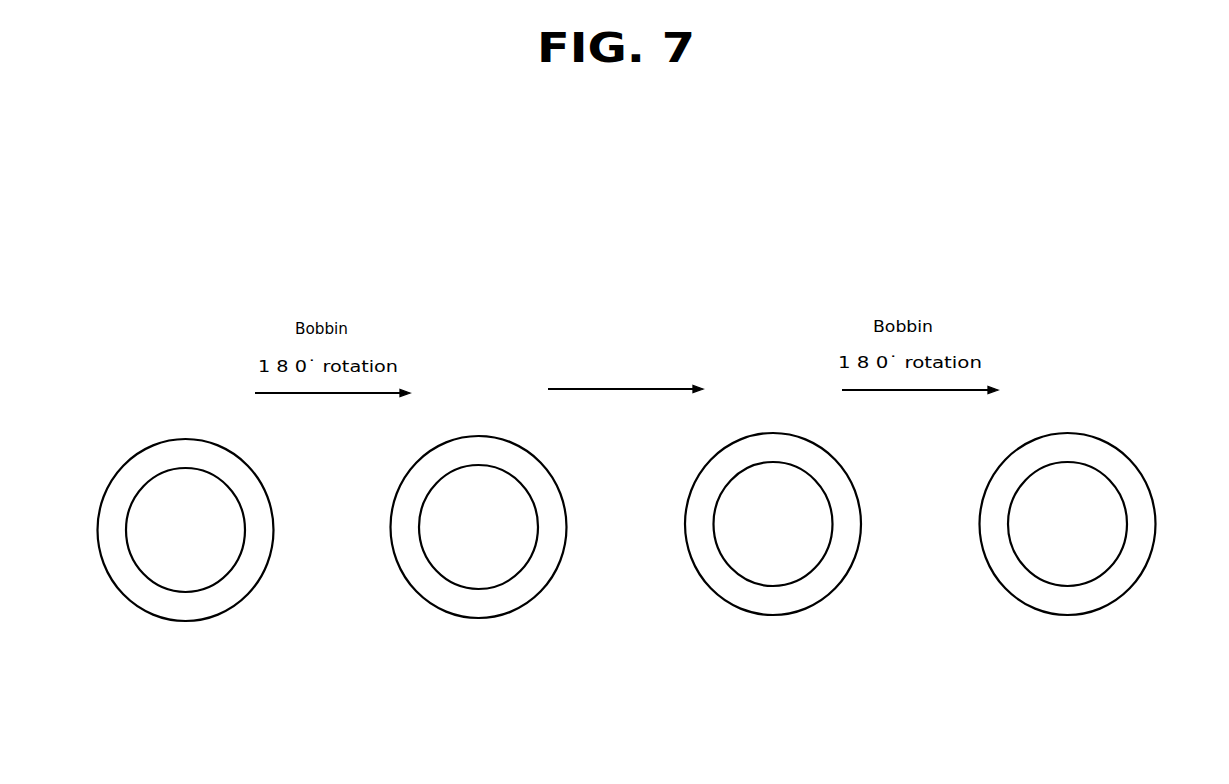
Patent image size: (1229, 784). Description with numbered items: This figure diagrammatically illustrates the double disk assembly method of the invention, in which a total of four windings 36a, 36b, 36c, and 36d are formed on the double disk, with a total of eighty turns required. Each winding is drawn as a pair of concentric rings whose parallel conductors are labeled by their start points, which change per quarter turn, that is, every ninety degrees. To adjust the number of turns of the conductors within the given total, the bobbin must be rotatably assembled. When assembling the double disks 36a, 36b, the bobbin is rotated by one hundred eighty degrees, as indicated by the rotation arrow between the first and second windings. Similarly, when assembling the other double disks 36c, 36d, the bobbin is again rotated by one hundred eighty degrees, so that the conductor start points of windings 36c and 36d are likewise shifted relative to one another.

The winding 36a is at (280, 635).
The winding 36b is at (574, 635).
The winding 36c is at (868, 635).
The winding 36d is at (1162, 635).